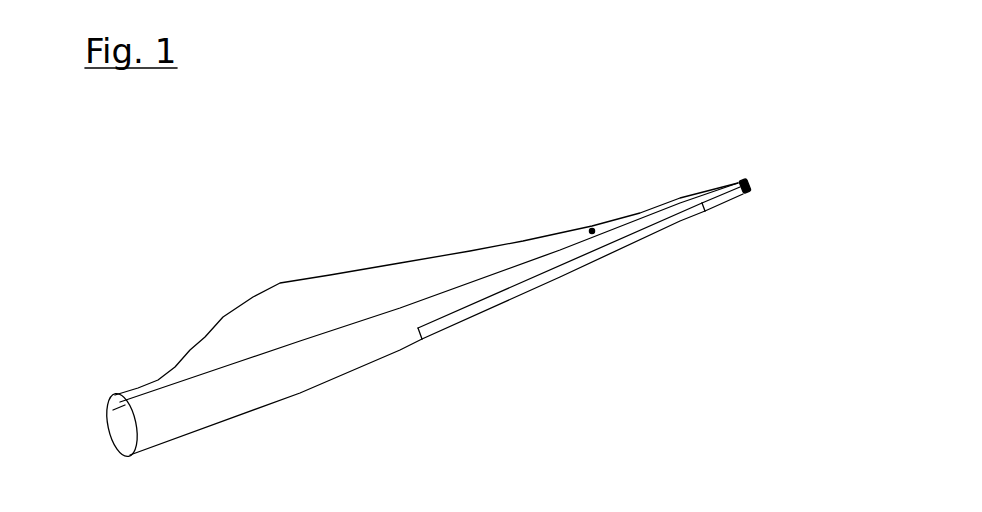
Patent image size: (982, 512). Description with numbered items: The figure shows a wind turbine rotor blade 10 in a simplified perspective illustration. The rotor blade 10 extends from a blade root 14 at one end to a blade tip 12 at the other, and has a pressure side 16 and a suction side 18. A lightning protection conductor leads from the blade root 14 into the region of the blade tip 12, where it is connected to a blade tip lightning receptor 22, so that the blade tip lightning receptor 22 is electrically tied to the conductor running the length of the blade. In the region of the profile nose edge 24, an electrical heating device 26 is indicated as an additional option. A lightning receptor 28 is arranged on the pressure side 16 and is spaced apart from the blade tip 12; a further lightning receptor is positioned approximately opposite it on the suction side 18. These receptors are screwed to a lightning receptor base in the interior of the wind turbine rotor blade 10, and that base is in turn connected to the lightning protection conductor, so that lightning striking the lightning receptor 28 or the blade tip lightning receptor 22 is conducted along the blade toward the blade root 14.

The wind turbine rotor blade 10 is at (552, 327).
The blade tip 12 is at (743, 179).
The blade root 14 is at (115, 440).
The pressure side 16 is at (442, 277).
The suction side 18 is at (368, 365).
The blade tip lightning receptor 22 is at (750, 185).
The profile nose edge 24 is at (313, 388).
The electrical heating device 26 is at (593, 256).
The lightning receptor 28 is at (592, 231).